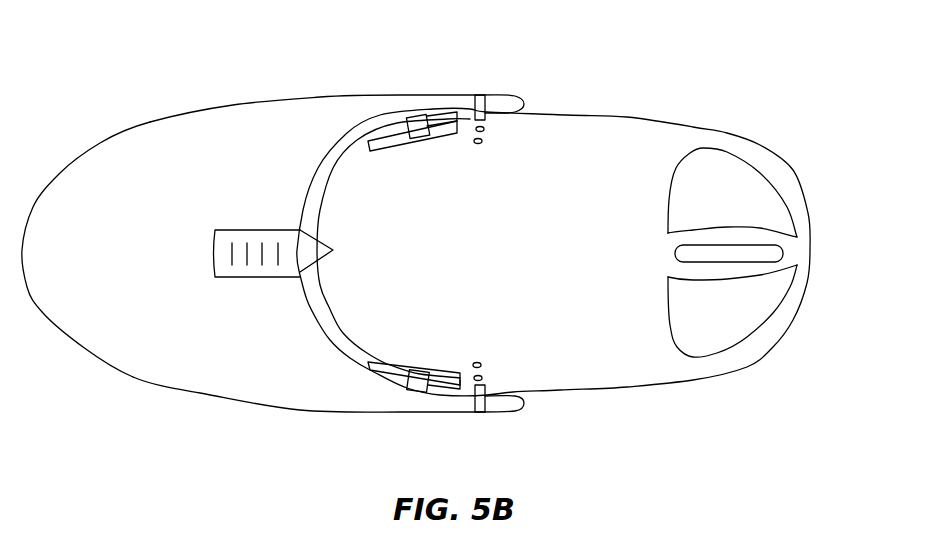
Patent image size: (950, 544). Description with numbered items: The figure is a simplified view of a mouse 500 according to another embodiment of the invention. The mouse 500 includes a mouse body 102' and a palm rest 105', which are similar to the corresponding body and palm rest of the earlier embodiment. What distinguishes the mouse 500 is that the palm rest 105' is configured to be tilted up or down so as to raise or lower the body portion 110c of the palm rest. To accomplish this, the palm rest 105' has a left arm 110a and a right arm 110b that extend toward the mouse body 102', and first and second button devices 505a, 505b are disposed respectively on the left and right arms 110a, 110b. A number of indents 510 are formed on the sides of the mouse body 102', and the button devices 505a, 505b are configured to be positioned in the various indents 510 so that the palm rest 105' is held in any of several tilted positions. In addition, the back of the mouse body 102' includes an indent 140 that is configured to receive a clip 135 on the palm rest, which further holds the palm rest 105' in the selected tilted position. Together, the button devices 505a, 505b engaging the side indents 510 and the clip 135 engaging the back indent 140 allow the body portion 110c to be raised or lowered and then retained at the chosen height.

The mouse 500 is at (803, 53).
The mouse body 102' is at (553, 241).
The palm rest 105' is at (273, 252).
The left arm 110a is at (315, 95).
The right arm 110b is at (317, 410).
The body portion 110c is at (94, 249).
The clip 135 is at (306, 251).
The indent 140 is at (335, 253).
The first button device 505a is at (481, 95).
The second button device 505b is at (482, 412).
The indents 510 is at (484, 129).